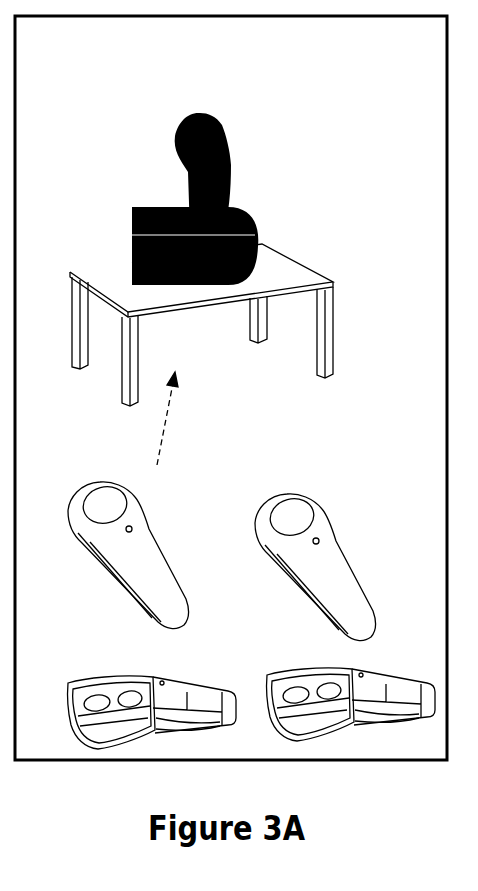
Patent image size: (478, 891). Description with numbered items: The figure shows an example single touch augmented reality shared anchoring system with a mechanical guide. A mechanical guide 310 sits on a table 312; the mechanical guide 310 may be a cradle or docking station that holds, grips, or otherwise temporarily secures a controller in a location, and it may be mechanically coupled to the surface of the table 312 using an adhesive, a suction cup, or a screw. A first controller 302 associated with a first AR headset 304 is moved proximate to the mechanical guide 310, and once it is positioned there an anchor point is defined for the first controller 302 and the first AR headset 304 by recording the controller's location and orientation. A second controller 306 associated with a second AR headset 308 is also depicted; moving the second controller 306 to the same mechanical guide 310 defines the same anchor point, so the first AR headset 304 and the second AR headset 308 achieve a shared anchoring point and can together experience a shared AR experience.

The first controller 302 is at (223, 133).
The first AR headset 304 is at (178, 680).
The second controller 306 is at (340, 547).
The second AR headset 308 is at (372, 722).
The mechanical guide 310 is at (249, 248).
The table 312 is at (308, 265).